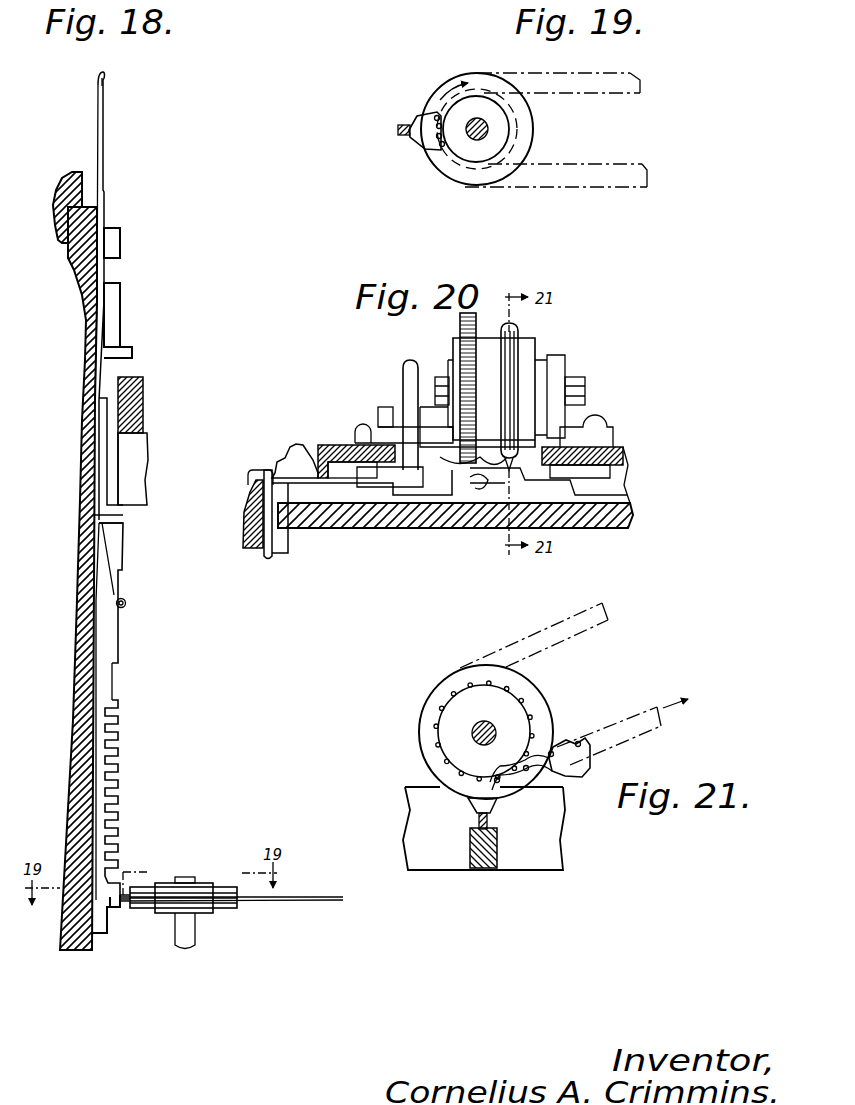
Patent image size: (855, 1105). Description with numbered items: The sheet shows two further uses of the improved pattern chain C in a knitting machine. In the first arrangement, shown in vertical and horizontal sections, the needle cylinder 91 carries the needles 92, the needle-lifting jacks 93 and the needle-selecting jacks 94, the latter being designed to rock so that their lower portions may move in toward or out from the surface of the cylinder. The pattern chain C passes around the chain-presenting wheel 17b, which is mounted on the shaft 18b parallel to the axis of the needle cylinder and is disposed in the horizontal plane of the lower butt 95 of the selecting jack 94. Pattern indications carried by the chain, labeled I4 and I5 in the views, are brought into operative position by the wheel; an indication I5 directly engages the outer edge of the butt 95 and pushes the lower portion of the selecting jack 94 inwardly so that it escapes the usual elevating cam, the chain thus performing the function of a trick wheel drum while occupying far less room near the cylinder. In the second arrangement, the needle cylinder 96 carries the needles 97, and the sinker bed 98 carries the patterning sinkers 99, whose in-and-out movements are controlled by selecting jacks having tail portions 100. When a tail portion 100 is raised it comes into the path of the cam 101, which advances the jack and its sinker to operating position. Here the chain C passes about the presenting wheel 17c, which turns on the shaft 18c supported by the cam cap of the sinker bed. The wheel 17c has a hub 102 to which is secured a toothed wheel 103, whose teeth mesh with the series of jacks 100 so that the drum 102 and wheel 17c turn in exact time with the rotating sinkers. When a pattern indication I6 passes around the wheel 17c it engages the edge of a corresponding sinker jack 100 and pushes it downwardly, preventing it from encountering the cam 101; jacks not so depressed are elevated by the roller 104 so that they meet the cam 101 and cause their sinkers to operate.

In FIG. 18, the needle cylinder 91 is at (85, 393).
In FIG. 18, the needles 92 is at (122, 270).
In FIG. 18, the needle-lifting jacks 93 is at (100, 477).
In FIG. 18, the needle-selecting jacks 94 is at (112, 588).
In FIG. 19, the needle-selecting jacks 94 is at (396, 123).
In FIG. 18, the lower butt 95 is at (113, 904).
In FIG. 18, the chain-presenting wheel 17b is at (225, 886).
In FIG. 18, the shaft 18b is at (190, 935).
In FIG. 19, the shaft 18b is at (522, 132).
In FIG. 18, the pattern chain C is at (318, 896).
In FIG. 19, the pattern chain C is at (588, 80).
In FIG. 21, the pattern chain C is at (535, 637).
In FIG. 18, the pawl I4 is at (116, 902).
In FIG. 19, the pattern indications I5 is at (423, 138).
In FIG. 20, the needle cylinder 96 is at (253, 548).
In FIG. 20, the needles 97 is at (275, 560).
In FIG. 20, the sinker bed 98 is at (322, 518).
In FIG. 20, the patterning sinkers 99 is at (292, 458).
In FIG. 20, the sinker jack tail portions 100 is at (582, 498).
In FIG. 21, the sinker jack tail portions 100 is at (490, 826).
In FIG. 20, the cam 101 is at (622, 466).
In FIG. 20, the hub 102 is at (527, 350).
In FIG. 20, the toothed wheel 103 is at (461, 328).
In FIG. 20, the roller 104 is at (410, 368).
In FIG. 20, the presenting wheel 17c is at (520, 336).
In FIG. 21, the presenting wheel 17c is at (533, 700).
In FIG. 21, the shaft 18c is at (473, 727).
In FIG. 20, the pattern indications I6 is at (520, 462).
In FIG. 21, the pattern indications I6 is at (589, 744).